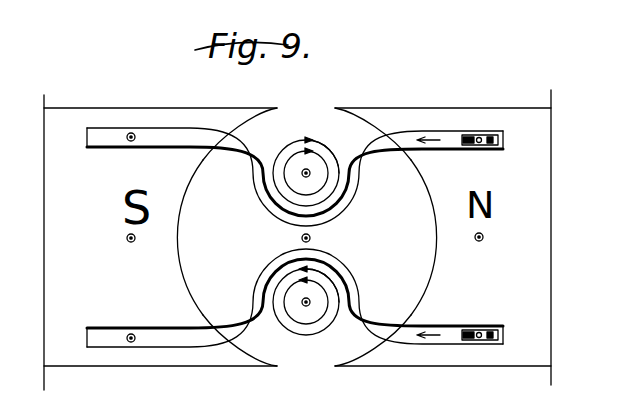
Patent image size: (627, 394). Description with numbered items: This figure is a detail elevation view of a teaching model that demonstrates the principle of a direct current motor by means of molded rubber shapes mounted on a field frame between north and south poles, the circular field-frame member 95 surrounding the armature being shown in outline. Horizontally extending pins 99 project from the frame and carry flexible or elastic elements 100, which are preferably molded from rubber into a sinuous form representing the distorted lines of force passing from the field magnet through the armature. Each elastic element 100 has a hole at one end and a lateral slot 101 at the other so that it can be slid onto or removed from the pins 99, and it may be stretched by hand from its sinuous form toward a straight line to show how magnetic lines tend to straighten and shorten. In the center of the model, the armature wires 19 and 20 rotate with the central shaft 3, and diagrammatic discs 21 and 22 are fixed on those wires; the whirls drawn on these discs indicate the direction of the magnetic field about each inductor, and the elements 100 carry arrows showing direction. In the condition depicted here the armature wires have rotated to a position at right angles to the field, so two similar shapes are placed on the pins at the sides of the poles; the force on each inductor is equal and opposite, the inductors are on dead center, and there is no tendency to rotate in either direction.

The central shaft 3 is at (311, 238).
The wire 19 is at (305, 172).
The wire 20 is at (302, 307).
The element 21 is at (318, 170).
The element 22 is at (312, 313).
The disk armature 95 is at (525, 204).
The pin 99 is at (132, 133).
The elastic element 100 is at (180, 140).
The slot 101 is at (501, 127).